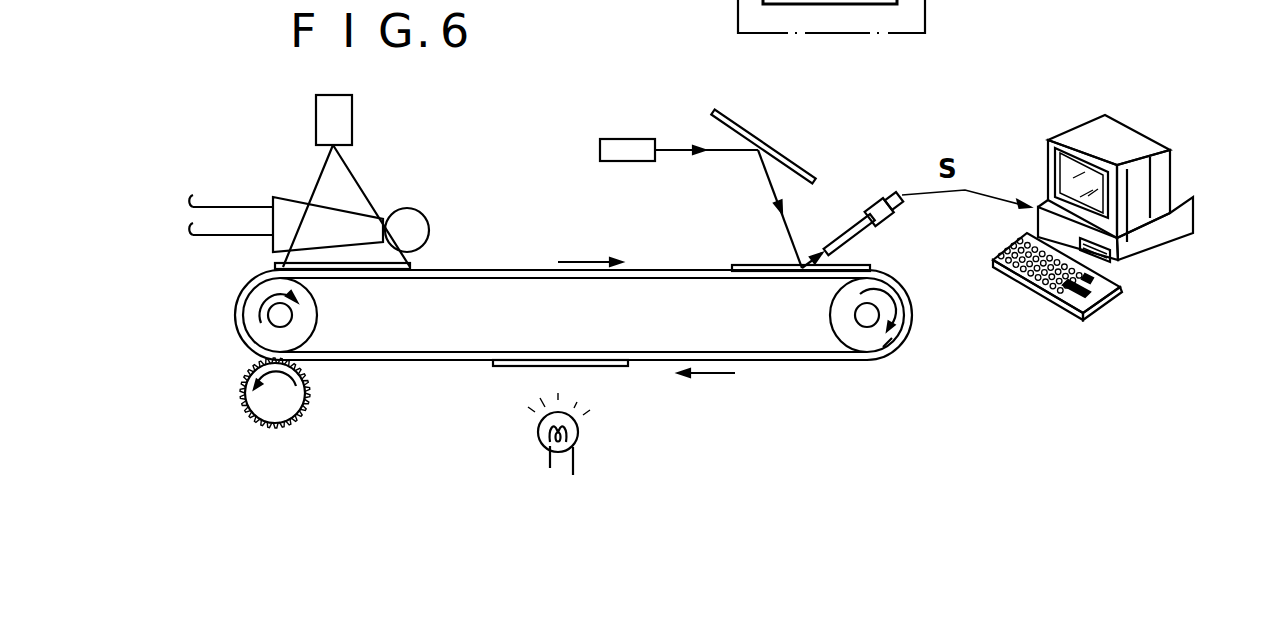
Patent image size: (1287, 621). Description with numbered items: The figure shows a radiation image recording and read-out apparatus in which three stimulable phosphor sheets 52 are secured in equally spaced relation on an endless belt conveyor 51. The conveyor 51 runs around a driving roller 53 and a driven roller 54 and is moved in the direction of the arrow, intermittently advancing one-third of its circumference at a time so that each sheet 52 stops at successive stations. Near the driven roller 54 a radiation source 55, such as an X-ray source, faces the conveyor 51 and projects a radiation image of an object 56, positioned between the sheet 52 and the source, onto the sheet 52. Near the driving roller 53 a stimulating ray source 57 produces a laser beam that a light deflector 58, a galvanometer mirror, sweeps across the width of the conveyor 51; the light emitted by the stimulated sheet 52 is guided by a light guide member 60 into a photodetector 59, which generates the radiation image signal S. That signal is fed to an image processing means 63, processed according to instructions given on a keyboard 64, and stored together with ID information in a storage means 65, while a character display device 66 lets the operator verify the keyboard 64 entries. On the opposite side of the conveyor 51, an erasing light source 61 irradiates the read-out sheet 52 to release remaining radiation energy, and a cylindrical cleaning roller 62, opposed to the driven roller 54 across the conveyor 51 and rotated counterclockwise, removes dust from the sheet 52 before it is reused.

The endless belt conveyor 51 is at (798, 363).
The stimulable phosphor sheet 52 is at (413, 266).
The driving roller 53 is at (898, 357).
The driven roller 54 is at (238, 327).
The radiation source 55 is at (352, 118).
The object 56 is at (281, 196).
The stimulating ray source 57 is at (600, 150).
The light deflector 58 is at (770, 133).
The photodetector 59 is at (878, 192).
The light guide member 60 is at (836, 228).
The erasing light source 61 is at (577, 430).
The cleaning roller 62 is at (298, 402).
The image processing means 63 is at (1197, 220).
The keyboard 64 is at (1012, 270).
The storage means 65 is at (1122, 263).
The character display device 66 is at (1048, 140).